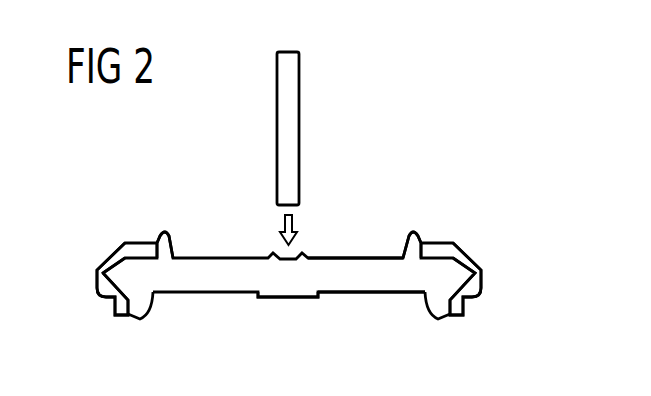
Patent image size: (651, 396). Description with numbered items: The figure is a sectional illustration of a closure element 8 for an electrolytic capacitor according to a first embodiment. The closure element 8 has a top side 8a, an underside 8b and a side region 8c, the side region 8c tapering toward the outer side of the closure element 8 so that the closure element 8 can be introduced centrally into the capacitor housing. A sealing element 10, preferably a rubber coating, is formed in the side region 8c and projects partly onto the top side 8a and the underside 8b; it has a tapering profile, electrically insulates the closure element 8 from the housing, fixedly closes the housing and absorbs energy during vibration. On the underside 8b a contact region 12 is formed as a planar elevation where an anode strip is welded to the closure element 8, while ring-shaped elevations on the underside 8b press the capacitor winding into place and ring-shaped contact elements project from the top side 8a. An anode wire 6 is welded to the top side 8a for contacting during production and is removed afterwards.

The anode wire 6 is at (288, 108).
The closure element 8 is at (223, 268).
The top side 8a is at (352, 258).
The underside 8b is at (372, 293).
The side region 8c is at (100, 289).
The sealing element 10 is at (463, 305).
The contact region 12 is at (288, 298).